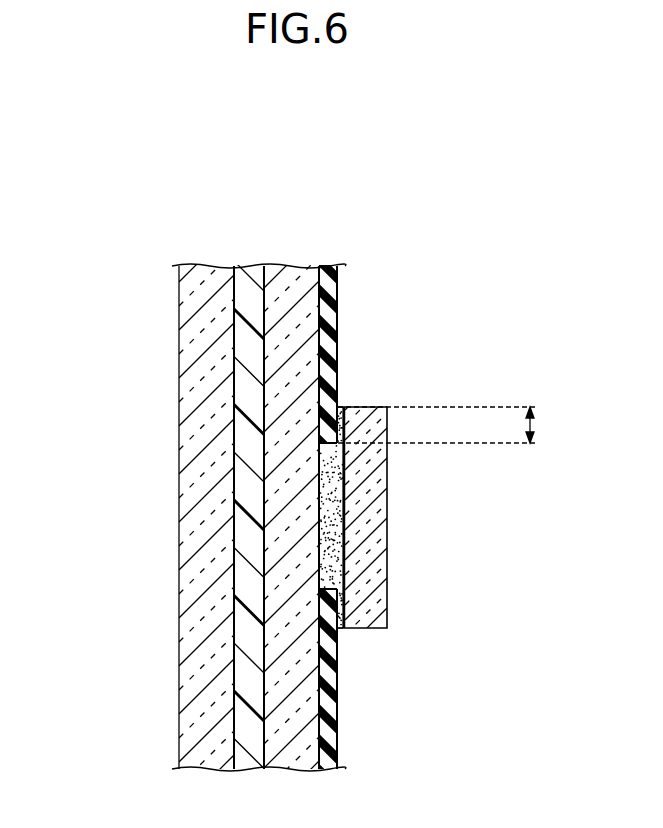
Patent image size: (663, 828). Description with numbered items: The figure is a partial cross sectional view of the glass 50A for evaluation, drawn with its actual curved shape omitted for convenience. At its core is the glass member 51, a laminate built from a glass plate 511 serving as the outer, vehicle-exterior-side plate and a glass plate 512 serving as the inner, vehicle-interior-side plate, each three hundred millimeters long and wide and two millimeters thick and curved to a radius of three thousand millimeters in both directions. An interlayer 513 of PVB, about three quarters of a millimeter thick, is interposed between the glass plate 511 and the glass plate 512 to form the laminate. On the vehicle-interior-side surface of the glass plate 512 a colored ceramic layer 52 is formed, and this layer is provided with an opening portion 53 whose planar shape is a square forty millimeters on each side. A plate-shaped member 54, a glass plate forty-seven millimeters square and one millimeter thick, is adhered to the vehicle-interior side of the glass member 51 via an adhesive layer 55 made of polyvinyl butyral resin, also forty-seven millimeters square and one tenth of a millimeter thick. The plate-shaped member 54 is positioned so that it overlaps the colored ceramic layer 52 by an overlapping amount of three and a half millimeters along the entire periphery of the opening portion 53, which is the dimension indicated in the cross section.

The glass for evaluation 50A is at (80, 141).
The glass member 51 is at (327, 202).
The glass plate 511 is at (200, 285).
The interlayer 513 is at (247, 283).
The glass plate 512 is at (300, 285).
The colored ceramic layer 52 is at (332, 283).
The opening portion 53 is at (330, 518).
The plate-shaped member 54 is at (366, 613).
The adhesive layer 55 is at (343, 628).